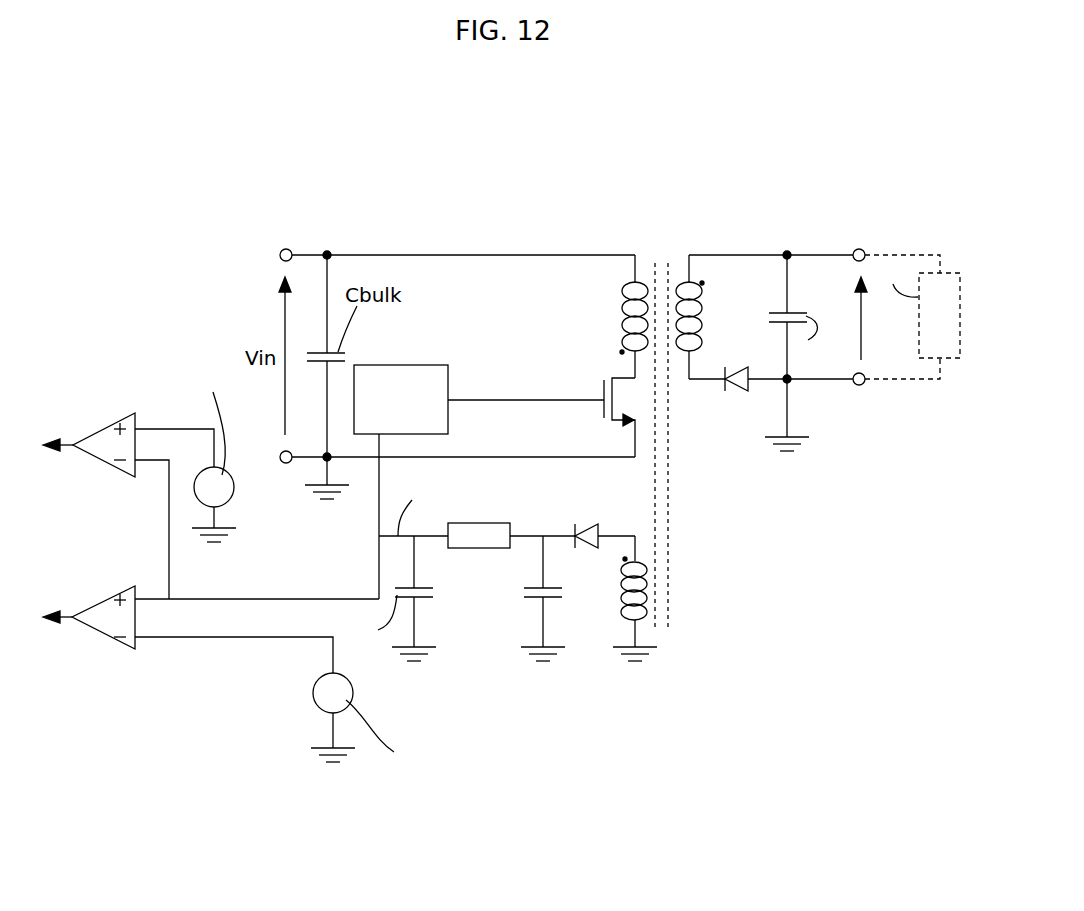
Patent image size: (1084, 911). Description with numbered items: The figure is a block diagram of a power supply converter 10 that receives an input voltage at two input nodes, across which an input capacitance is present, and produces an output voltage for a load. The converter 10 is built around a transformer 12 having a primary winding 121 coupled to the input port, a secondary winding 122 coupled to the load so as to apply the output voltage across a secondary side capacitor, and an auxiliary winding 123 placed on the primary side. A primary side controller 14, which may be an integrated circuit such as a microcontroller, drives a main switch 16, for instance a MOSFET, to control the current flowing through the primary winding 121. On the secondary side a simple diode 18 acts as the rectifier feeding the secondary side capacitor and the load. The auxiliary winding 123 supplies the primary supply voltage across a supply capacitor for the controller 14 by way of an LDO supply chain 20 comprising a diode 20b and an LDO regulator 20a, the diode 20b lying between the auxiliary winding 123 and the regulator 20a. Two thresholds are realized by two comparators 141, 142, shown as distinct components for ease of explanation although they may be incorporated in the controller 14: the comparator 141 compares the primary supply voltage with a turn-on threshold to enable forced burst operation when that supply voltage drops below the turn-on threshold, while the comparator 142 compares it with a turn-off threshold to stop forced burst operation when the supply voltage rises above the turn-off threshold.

The converter 10 is at (785, 492).
The transformer 12 is at (688, 400).
The primary side controller 14 is at (405, 365).
The main switch 16 is at (598, 374).
The diode 18 is at (751, 400).
The LDO supply chain 20 is at (460, 632).
The LDO regulator 20a is at (465, 549).
The diode 20b is at (589, 556).
The primary winding 121 is at (616, 301).
The secondary winding 122 is at (712, 316).
The auxiliary winding 123 is at (616, 610).
The comparator 141 is at (96, 630).
The comparator 142 is at (108, 438).